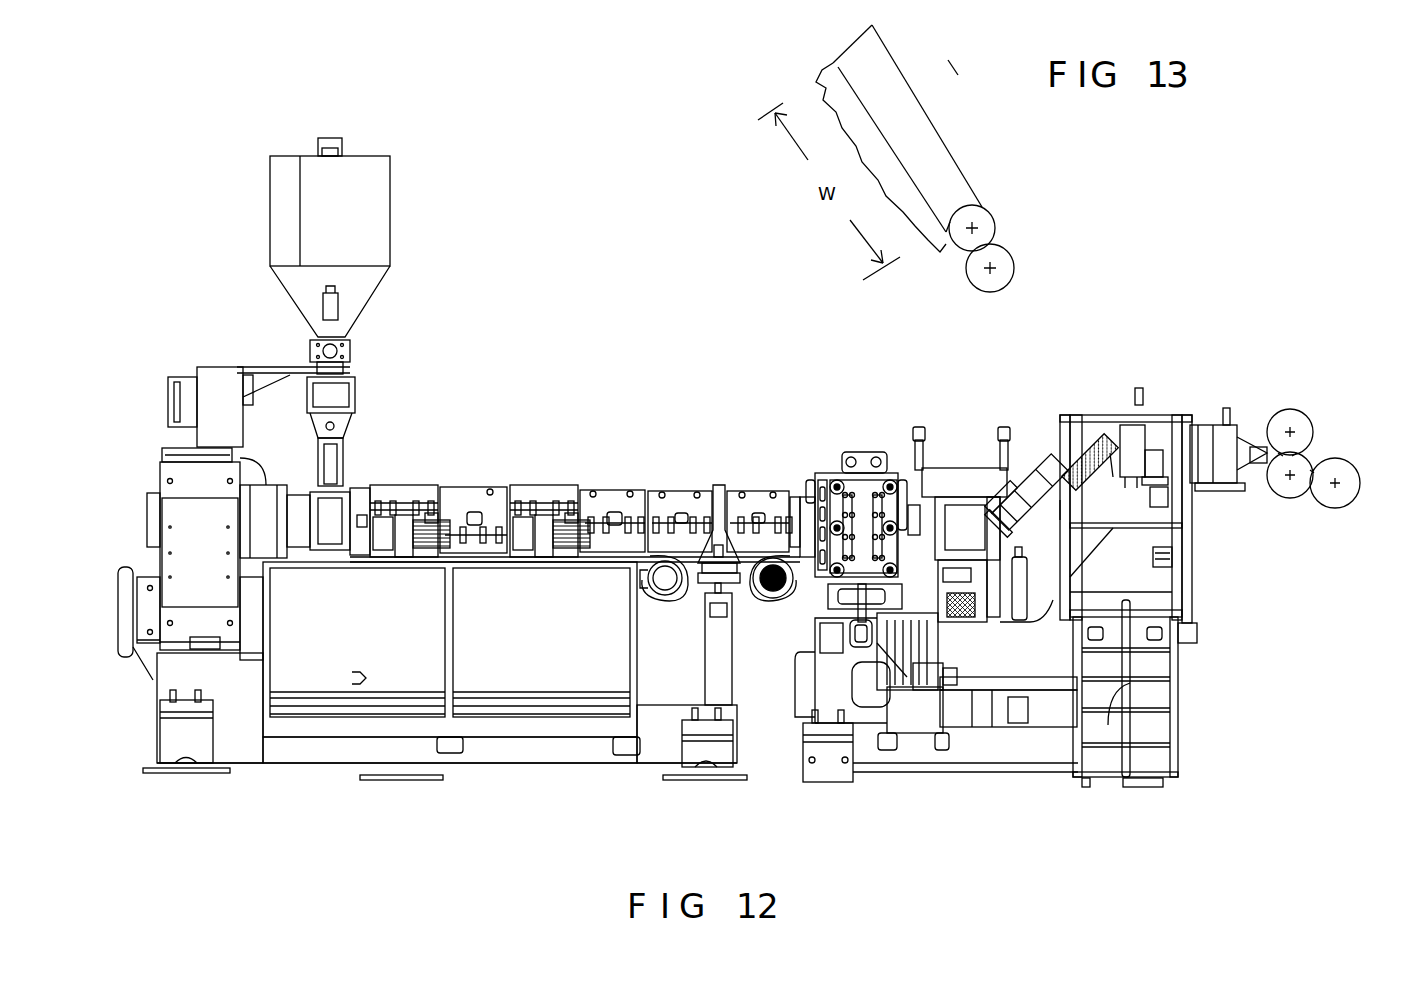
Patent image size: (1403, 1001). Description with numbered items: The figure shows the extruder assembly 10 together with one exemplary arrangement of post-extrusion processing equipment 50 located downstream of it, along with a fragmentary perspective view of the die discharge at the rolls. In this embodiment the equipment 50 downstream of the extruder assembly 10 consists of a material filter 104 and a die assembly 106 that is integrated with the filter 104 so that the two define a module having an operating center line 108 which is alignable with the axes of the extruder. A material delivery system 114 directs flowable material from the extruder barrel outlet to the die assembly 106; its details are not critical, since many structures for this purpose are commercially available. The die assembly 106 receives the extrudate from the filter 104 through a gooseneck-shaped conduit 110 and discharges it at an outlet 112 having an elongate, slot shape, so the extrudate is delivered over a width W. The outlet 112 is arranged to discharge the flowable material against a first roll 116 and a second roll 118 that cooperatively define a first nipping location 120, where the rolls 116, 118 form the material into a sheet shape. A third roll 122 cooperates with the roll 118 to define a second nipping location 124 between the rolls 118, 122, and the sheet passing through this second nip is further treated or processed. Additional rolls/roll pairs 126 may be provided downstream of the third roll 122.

In FIG. 12, the extruder assembly 10 is at (460, 809).
In FIG. 12, the post-extrusion processing equipment 50 is at (1075, 626).
In FIG. 12, the material filter 104 is at (857, 563).
In FIG. 12, the die assembly 106 is at (1180, 378).
In FIG. 12, the operating center line 108 is at (862, 527).
In FIG. 12, the gooseneck-shaped conduit 110 is at (1052, 452).
In FIG. 13, the outlet 112 is at (944, 217).
In FIG. 12, the material delivery system 114 is at (982, 438).
In FIG. 13, the first roll 116 is at (907, 120).
In FIG. 12, the first roll 116 is at (1290, 410).
In FIG. 13, the second roll 118 is at (1010, 258).
In FIG. 12, the second roll 118 is at (1288, 497).
In FIG. 12, the first nipping location 120 is at (1277, 457).
In FIG. 12, the third roll 122 is at (1337, 508).
In FIG. 12, the second nipping location 124 is at (1326, 463).
In FIG. 12, the additional rolls/roll pairs 126 is at (1312, 520).